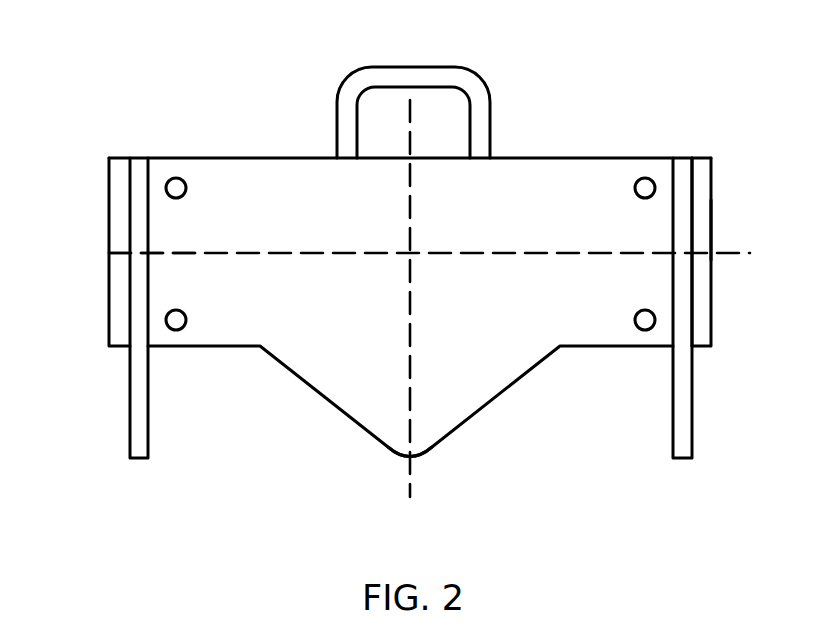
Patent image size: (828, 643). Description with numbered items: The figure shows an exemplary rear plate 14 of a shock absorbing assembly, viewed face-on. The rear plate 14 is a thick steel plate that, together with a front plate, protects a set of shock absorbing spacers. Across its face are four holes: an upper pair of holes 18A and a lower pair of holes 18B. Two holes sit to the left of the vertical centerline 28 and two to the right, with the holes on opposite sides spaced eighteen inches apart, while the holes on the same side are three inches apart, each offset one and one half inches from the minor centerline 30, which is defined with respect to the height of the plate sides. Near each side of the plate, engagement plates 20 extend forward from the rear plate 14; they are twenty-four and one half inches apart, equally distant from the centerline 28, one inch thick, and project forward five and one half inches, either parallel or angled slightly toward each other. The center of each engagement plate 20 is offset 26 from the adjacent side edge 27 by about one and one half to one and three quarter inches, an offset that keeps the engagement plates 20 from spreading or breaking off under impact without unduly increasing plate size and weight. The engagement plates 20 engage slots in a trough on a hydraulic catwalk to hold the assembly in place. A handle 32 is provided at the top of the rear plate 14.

The rear plate 14 is at (475, 316).
The holes 18A is at (186, 190).
The holes 18B is at (186, 318).
The engagement plates 20 is at (128, 408).
The offset 26 is at (712, 157).
The side edge 27 is at (728, 224).
The centerline 28 is at (410, 489).
The minor centerline 30 is at (96, 253).
The handle 32 is at (477, 83).